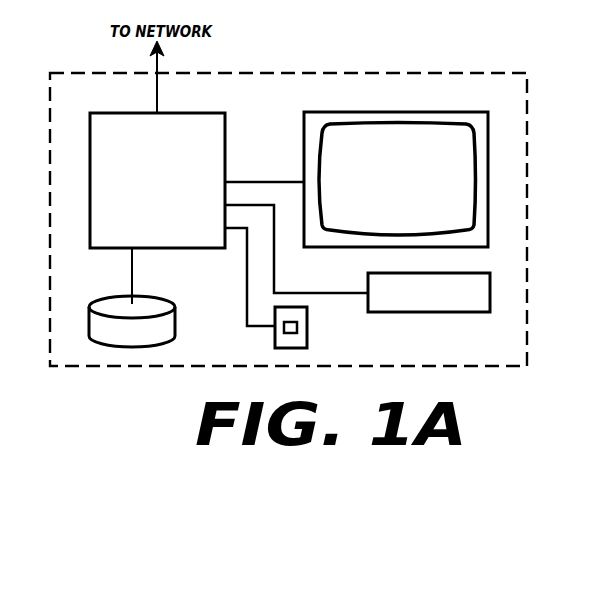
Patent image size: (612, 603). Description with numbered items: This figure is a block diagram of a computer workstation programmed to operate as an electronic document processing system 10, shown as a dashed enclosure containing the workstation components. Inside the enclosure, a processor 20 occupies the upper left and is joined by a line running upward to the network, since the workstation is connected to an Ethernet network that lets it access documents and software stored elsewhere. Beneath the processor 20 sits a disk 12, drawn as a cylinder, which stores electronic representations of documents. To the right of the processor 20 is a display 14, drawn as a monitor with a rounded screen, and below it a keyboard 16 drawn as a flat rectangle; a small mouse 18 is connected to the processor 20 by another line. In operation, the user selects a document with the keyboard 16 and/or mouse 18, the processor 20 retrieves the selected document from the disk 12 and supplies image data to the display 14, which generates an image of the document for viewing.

The electronic document processing system 10 is at (480, 72).
The disk 12 is at (158, 302).
The display 14 is at (413, 111).
The keyboard 16 is at (458, 313).
The mouse 18 is at (307, 332).
The processor 20 is at (191, 112).